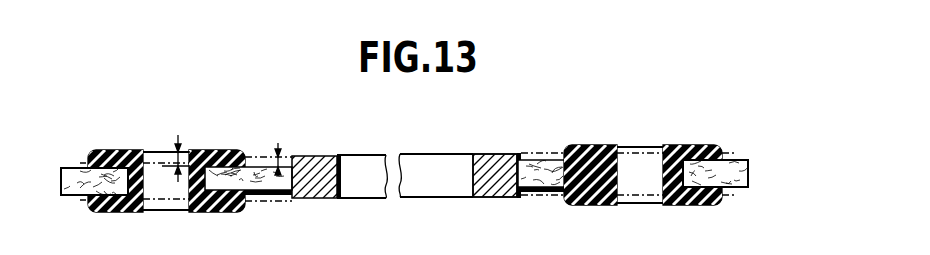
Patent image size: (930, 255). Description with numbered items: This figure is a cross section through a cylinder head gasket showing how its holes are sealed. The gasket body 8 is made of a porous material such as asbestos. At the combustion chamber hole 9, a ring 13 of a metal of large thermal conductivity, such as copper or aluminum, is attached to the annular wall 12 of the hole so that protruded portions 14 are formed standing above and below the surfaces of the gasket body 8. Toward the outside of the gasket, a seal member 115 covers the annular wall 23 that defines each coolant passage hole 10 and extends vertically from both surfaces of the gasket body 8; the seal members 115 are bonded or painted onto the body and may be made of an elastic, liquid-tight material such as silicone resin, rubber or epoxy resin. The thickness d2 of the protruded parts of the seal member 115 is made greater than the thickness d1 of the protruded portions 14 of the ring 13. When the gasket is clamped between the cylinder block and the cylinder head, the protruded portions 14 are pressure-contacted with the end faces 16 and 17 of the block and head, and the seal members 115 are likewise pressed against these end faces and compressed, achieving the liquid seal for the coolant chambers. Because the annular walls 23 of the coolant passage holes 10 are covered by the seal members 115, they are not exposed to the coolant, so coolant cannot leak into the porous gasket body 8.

The seal member 115 is at (117, 213).
The coolant passage hole 10 is at (169, 211).
The annular wall 23 is at (209, 210).
The gasket body 8 is at (250, 193).
The end face 16 is at (267, 197).
The end face 17 is at (253, 156).
The thickness of protruded portions of ring d1 is at (272, 156).
The thickness of protruded portions of seal member d2 is at (177, 158).
The combustion chamber hole 9 is at (440, 196).
The protruded portion 14 is at (316, 155).
The ring 13 is at (340, 155).
The annular wall 12 is at (493, 173).